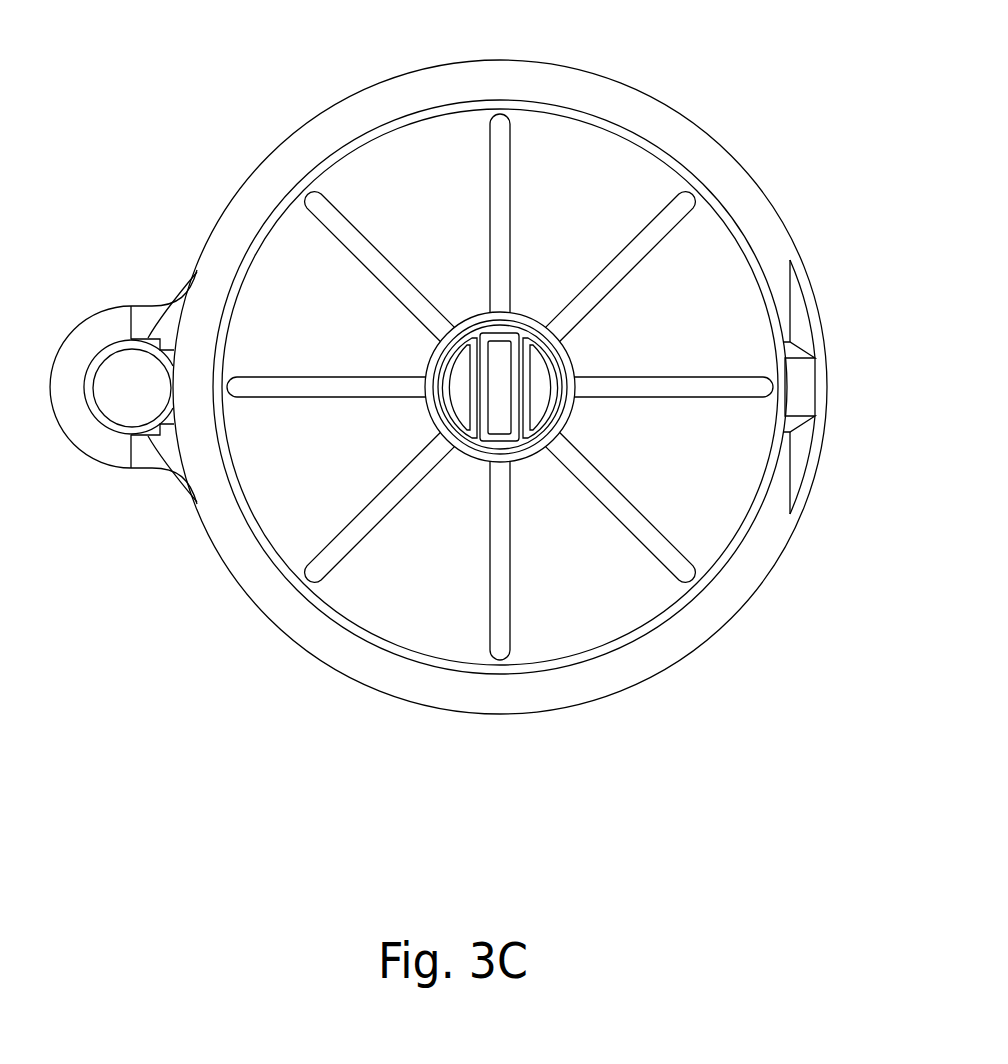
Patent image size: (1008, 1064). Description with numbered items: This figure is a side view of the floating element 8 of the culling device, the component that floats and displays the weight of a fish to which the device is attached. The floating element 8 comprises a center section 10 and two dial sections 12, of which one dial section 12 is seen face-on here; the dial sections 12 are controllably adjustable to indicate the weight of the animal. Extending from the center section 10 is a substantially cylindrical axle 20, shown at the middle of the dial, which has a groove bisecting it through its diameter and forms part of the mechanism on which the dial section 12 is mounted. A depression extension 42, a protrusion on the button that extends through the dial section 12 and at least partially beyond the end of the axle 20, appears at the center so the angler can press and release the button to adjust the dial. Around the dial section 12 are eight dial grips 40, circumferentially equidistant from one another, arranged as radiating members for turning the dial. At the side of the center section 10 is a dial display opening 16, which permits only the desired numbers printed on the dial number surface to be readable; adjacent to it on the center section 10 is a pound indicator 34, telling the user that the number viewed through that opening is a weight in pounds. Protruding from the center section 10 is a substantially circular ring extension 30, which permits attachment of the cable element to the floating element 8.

The floating element 8 is at (796, 135).
The center section 10 is at (558, 88).
The dial section 12 is at (633, 183).
The dial display opening 16 is at (802, 383).
The axle 20 is at (460, 385).
The ring extension 30 is at (92, 340).
The pound indicator 34 is at (773, 542).
The dial grips 40 is at (492, 623).
The depression extension 42 is at (498, 420).